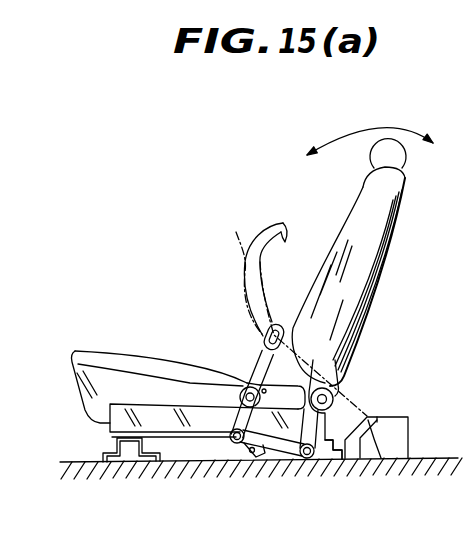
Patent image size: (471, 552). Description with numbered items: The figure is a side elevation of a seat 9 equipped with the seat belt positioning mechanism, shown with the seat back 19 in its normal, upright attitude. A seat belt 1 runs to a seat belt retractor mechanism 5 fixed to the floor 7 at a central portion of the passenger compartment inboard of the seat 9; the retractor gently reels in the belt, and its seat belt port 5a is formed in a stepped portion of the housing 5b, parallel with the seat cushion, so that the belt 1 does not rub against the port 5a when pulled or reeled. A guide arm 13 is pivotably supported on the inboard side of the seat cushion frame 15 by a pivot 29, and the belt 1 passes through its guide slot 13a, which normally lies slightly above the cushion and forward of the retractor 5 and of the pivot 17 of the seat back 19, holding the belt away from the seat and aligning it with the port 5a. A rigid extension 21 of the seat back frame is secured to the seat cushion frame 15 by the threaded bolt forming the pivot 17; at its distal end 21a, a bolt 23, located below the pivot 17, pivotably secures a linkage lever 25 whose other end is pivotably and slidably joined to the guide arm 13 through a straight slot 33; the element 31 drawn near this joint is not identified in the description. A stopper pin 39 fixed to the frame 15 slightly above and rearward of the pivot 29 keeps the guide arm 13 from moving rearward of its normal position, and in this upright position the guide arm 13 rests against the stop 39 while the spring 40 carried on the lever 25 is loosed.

The seat belt 1 is at (250, 256).
The seat belt retractor mechanism 5 is at (397, 435).
The seat belt port 5a is at (398, 445).
The housing 5b is at (410, 456).
The floor 7 is at (93, 467).
The seat 9 is at (93, 384).
The guide arm 13 is at (247, 373).
The guide slot 13a is at (250, 303).
The seat cushion frame 15 is at (172, 420).
The pivot 17 is at (336, 397).
The seat back 19 is at (387, 254).
The extension 21 is at (340, 360).
The distal end of extension 21a is at (318, 460).
The bolt 23 is at (304, 460).
The linkage lever 25 is at (280, 456).
The pivot of the guide arm 29 is at (243, 371).
The pivot 31 is at (257, 327).
The straight slot 33 is at (238, 450).
The stopper pin 39 is at (283, 326).
The spring 40 is at (248, 460).